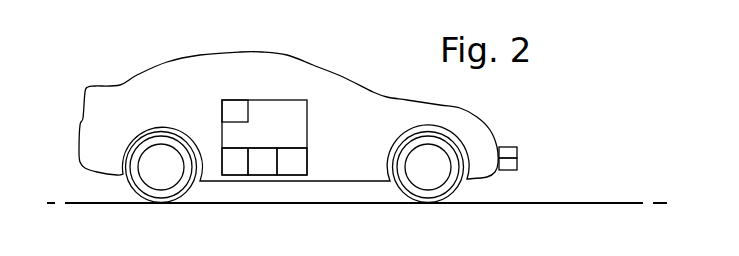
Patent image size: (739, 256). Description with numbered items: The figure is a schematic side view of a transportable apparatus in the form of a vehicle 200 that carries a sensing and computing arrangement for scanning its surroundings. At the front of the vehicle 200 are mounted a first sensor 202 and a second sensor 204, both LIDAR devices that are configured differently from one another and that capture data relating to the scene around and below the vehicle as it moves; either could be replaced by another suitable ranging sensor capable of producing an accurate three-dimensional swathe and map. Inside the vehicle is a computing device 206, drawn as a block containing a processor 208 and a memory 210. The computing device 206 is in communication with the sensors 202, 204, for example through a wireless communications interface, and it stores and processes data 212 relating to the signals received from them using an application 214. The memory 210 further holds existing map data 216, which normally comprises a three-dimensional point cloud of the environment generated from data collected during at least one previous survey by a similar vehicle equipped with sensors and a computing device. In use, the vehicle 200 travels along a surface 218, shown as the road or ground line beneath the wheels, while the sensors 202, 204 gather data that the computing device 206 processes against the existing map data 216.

The vehicle 200 is at (108, 78).
The first sensor 202 is at (517, 152).
The second sensor 204 is at (517, 163).
The computing device 206 is at (288, 100).
The processor 208 is at (232, 108).
The memory 210 is at (308, 163).
The data 212 is at (235, 168).
The application 214 is at (263, 168).
The existing map data 216 is at (293, 168).
The surface 218 is at (620, 200).